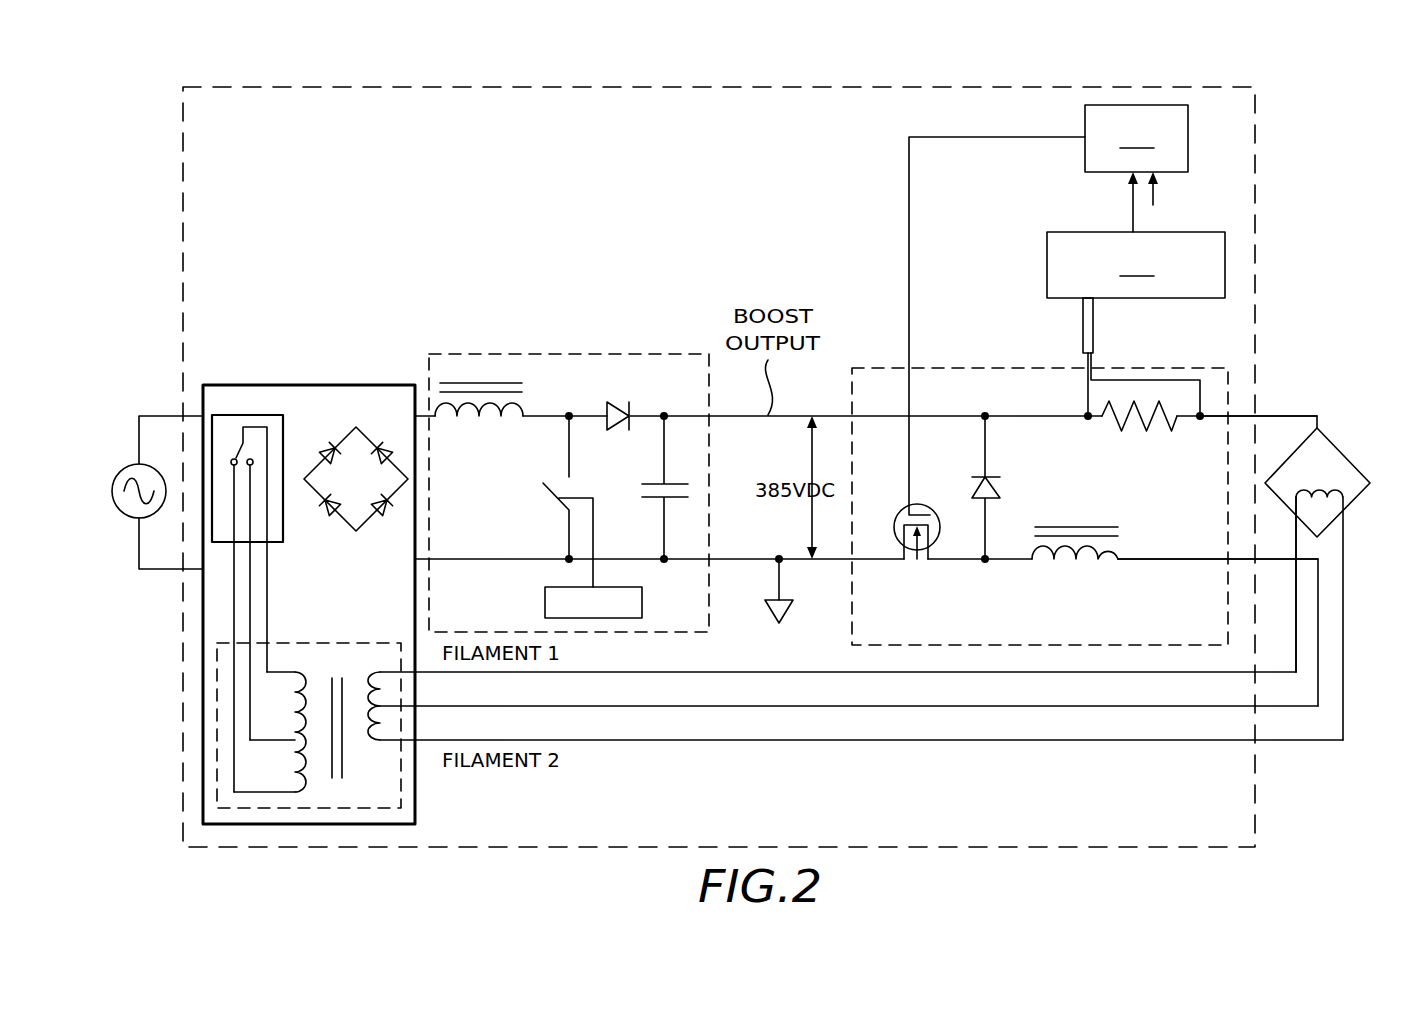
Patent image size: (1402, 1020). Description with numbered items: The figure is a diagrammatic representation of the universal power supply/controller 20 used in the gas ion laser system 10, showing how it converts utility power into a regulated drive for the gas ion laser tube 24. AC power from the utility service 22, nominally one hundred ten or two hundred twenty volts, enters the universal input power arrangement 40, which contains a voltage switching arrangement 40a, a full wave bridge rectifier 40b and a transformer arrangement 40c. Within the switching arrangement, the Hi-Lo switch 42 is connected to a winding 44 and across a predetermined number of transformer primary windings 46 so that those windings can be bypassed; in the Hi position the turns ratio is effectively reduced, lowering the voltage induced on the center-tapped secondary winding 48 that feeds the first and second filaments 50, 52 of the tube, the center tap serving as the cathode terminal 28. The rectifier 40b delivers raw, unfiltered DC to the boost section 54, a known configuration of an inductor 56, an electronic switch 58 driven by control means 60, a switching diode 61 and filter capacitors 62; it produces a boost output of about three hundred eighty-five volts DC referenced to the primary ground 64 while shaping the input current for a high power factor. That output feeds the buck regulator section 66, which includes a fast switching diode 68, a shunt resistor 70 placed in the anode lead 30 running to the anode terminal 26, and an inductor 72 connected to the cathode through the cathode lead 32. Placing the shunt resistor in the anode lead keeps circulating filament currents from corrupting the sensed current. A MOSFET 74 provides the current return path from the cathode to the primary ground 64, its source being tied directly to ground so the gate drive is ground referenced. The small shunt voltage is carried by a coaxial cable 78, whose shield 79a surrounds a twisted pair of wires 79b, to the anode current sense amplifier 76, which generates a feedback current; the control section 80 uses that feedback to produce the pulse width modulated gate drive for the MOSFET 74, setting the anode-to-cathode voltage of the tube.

The gas ion laser system 10 is at (1286, 144).
The universal power supply/controller 20 is at (511, 86).
The utility service 22 is at (124, 468).
The gas ion laser tube 24 is at (1350, 500).
The anode terminal 26 is at (1318, 430).
The cathode terminal 28 is at (1320, 538).
The anode lead 30 is at (1280, 415).
The cathode lead 32 is at (1208, 558).
The universal input power arrangement 40 is at (378, 385).
The voltage switching arrangement 40a is at (267, 415).
The full wave bridge rectifier 40b is at (362, 532).
The transformer arrangement 40c is at (216, 803).
The Hi-Lo switch 42 is at (232, 459).
The winding 44 is at (306, 793).
The transformer primary windings 46 is at (320, 785).
The secondary winding 48 is at (360, 672).
The first filament 50 is at (1310, 497).
The second filament 52 is at (1330, 497).
The boost section 54 is at (575, 353).
The inductor 56 is at (465, 418).
The electronic switch 58 is at (543, 490).
The control means 60 is at (545, 603).
The switching diode 61 is at (620, 400).
The filter capacitors 62 is at (660, 484).
The primary ground 64 is at (778, 580).
The buck regulator section 66 is at (889, 368).
The fast switching diode 68 is at (1003, 490).
The shunt resistor 70 is at (1118, 420).
The inductor 72 is at (1065, 560).
The MOSFET 74 is at (915, 508).
The anode current sense amplifier 76 is at (1136, 235).
The coaxial cable 78 is at (1080, 357).
The shield 79a is at (1093, 340).
The twisted pair of wires 79b is at (1093, 380).
The control section 80 is at (1136, 138).